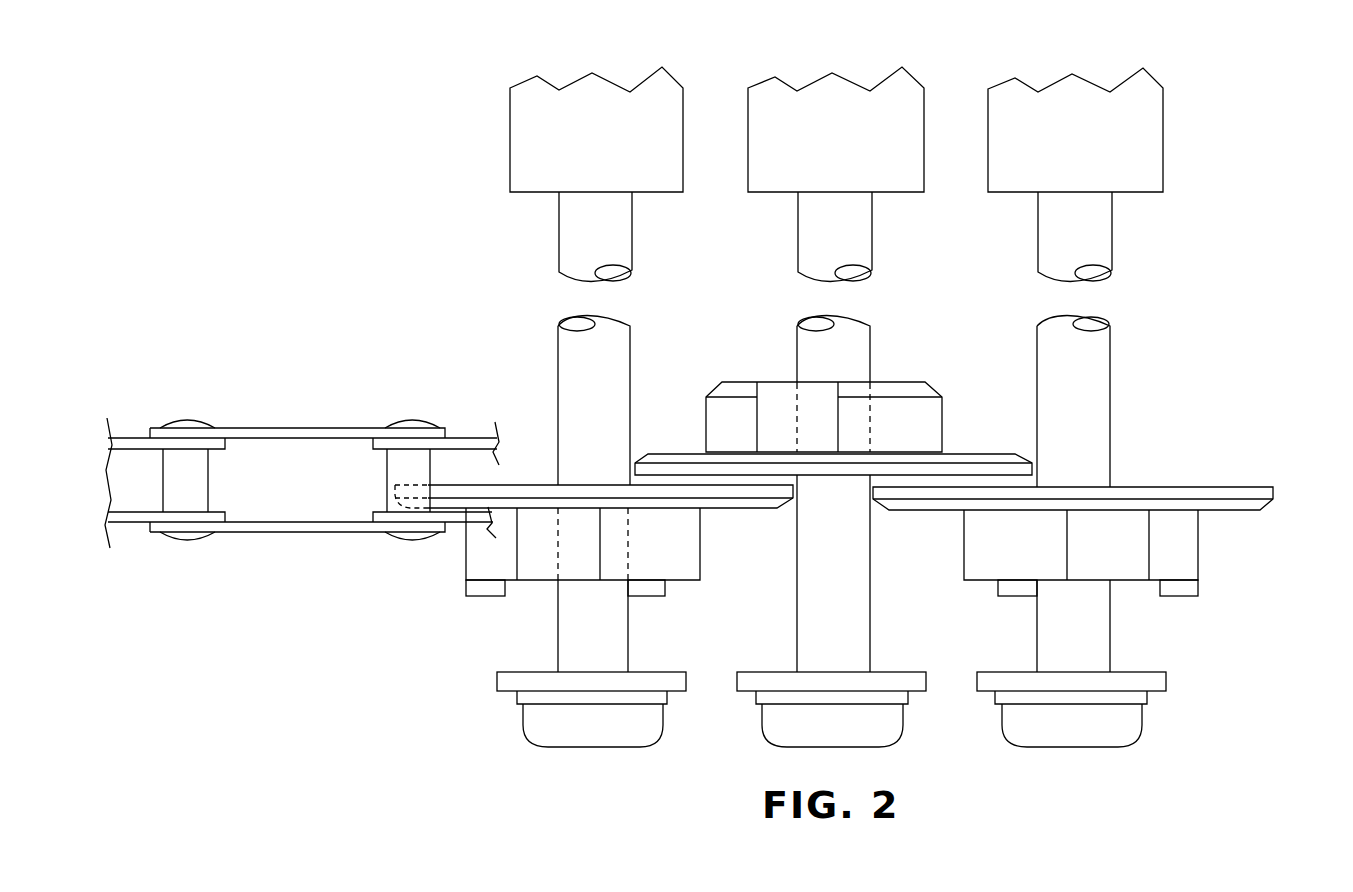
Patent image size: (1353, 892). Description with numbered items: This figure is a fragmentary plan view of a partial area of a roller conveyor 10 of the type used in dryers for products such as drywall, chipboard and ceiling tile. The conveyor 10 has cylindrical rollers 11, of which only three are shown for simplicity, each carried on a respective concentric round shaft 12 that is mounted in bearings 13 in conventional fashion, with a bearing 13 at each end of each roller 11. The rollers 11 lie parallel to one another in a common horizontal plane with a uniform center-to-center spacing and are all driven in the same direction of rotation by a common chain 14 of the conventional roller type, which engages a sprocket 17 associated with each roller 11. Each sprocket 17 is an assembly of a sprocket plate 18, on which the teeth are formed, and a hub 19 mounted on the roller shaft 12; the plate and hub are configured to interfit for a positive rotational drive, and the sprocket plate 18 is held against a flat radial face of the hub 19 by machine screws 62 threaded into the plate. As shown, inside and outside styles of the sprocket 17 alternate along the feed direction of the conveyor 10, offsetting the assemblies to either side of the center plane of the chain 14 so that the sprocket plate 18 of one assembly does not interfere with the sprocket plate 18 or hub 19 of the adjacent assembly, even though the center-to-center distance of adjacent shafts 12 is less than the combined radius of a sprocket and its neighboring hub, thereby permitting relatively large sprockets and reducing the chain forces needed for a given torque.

The roller conveyor 10 is at (1240, 126).
The cylindrical roller 11 is at (510, 138).
The round shaft 12 is at (630, 347).
The bearing 13 is at (523, 717).
The chain 14 is at (276, 428).
The sprocket 17 is at (438, 578).
The sprocket plate 18 is at (678, 453).
The hub 19 is at (748, 383).
The socket head machine screw 62 is at (480, 597).